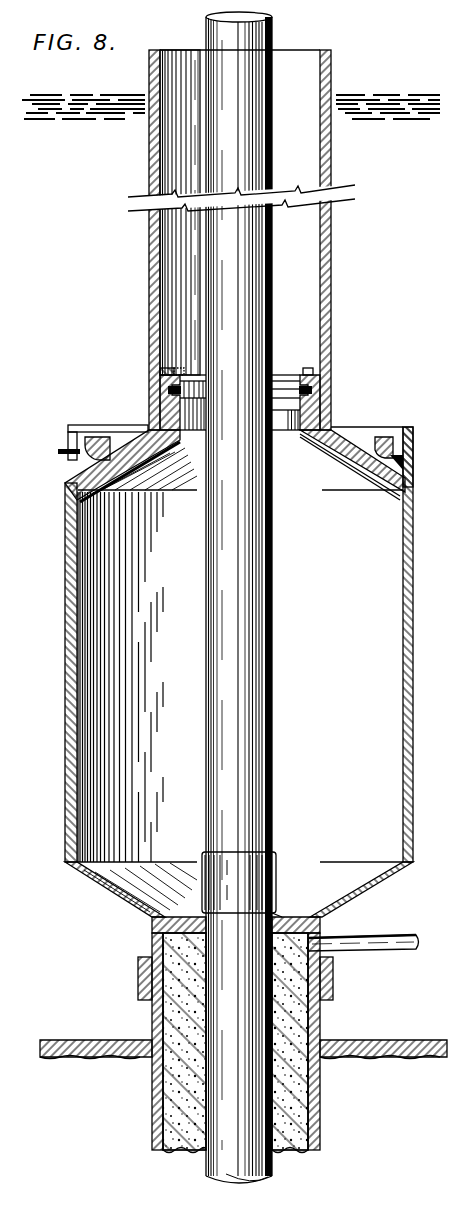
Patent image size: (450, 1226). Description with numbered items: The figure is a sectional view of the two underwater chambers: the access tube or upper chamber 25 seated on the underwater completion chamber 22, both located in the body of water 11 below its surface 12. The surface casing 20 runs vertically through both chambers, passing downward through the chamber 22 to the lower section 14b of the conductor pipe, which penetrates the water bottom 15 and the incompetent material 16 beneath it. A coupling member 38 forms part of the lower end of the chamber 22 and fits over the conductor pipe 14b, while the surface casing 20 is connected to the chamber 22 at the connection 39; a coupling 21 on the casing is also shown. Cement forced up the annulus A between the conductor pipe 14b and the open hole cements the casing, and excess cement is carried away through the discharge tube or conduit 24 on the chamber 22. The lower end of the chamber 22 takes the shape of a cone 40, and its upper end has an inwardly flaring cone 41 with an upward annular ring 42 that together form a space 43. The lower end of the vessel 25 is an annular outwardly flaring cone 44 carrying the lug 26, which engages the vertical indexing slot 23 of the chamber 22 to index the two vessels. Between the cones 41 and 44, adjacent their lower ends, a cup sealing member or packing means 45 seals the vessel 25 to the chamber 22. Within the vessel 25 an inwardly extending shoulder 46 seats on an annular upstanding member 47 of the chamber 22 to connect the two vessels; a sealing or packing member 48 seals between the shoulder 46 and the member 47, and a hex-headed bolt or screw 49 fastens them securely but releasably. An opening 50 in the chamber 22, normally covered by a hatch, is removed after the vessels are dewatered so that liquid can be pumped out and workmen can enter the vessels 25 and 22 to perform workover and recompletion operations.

The body of water 11 is at (86, 289).
The surface 12 is at (71, 98).
The surface casing 20 is at (216, 162).
The access tube or upper chamber 25 is at (154, 236).
The hex-headed bolt or screw 49 is at (168, 371).
The annular upstanding member 47 is at (168, 405).
The inwardly extending shoulder 46 is at (318, 380).
The sealing or packing member 48 is at (312, 390).
The opening 50 is at (282, 435).
The underwater completion chamber 22 is at (70, 658).
The vertical indexing slot 23 is at (68, 428).
The annular outwardly flaring cone 44 is at (113, 447).
The cup sealing member or packing means 45 is at (72, 480).
The lug 26 is at (60, 452).
The space 43 is at (390, 432).
The inwardly flaring cone 41 is at (362, 468).
The upward annular ring 42 is at (413, 452).
The incompetent material 16 is at (57, 1084).
The cone 40 is at (344, 899).
The coupling 21 is at (272, 870).
The connection 39 is at (274, 916).
The lower section of conductor pipe 14b is at (322, 1030).
The coupling member 38 is at (138, 978).
The discharge tube or conduit 24 is at (383, 937).
The water bottom 15 is at (66, 1040).
The annulus A is at (176, 1102).